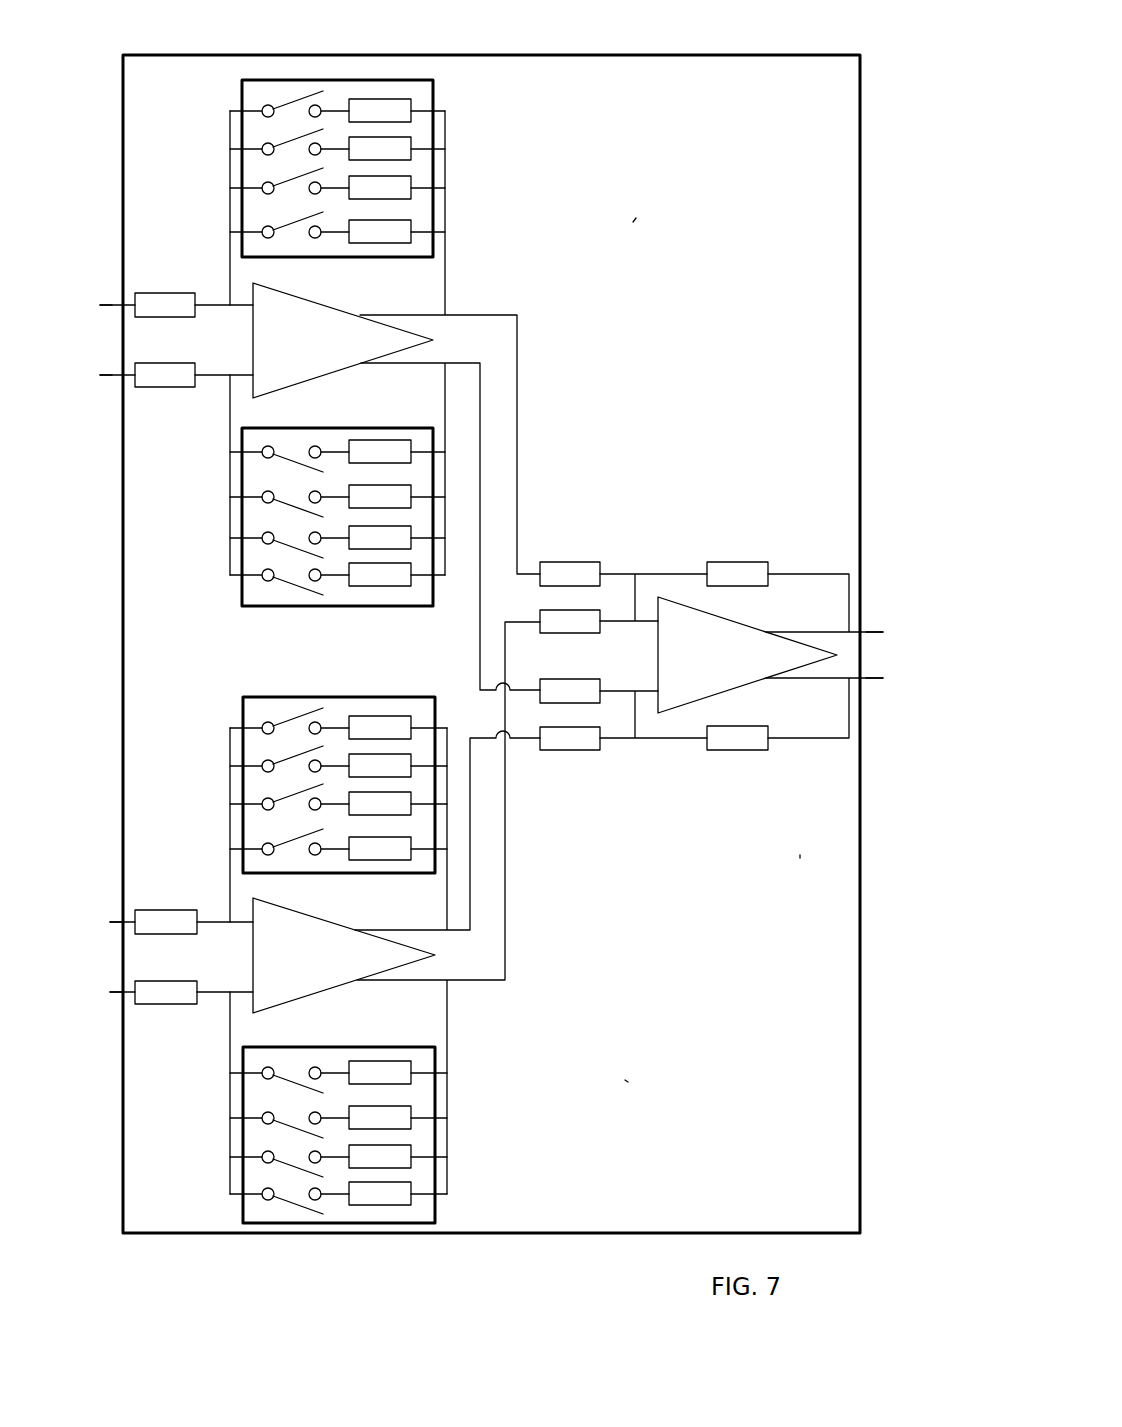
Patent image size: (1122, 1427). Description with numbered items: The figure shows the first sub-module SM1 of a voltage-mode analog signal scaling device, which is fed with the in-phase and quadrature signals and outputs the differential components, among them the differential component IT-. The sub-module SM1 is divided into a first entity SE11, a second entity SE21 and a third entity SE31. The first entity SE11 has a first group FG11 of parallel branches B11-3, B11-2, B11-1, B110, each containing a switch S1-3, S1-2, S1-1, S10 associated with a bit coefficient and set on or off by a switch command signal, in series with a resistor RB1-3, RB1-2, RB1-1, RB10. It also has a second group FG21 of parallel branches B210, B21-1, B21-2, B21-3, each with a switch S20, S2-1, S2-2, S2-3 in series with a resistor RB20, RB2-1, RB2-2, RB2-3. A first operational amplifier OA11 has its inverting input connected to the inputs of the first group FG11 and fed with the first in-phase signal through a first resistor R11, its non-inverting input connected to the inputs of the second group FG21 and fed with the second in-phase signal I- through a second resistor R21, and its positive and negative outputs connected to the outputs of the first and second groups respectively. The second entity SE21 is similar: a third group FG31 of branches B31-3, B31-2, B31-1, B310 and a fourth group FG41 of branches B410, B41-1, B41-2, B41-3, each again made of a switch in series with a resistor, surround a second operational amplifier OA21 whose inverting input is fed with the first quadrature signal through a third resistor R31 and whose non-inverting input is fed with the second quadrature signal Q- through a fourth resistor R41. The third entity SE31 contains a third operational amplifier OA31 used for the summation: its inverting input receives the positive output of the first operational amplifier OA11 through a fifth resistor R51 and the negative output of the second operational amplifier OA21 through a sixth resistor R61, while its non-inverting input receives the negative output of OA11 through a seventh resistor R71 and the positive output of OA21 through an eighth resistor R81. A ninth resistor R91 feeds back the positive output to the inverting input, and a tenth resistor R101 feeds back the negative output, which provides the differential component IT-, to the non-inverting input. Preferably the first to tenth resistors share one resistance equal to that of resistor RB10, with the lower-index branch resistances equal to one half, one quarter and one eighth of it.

The first sub-module SM1 is at (738, 55).
The first entity SE11 is at (633, 220).
The second entity SE21 is at (625, 1080).
The third entity SE31 is at (800, 855).
The first group FG11 is at (435, 80).
The second group FG21 is at (258, 606).
The third group FG31 is at (315, 875).
The fourth group FG41 is at (240, 1052).
The first resistor R11 is at (133, 291).
The second resistor R21 is at (133, 393).
The third resistor R31 is at (167, 936).
The fourth resistor R41 is at (167, 1006).
The fifth resistor R51 is at (603, 565).
The sixth resistor R61 is at (602, 638).
The seventh resistor R71 is at (602, 708).
The eighth resistor R81 is at (578, 752).
The ninth resistor R91 is at (752, 562).
The tenth resistor R101 is at (740, 750).
The first operational amplifier OA11 is at (420, 338).
The second operational amplifier OA21 is at (400, 973).
The third operational amplifier OA31 is at (748, 686).
The switch S1-3 is at (288, 88).
The switch S1-2 is at (272, 130).
The switch S1-1 is at (263, 173).
The switch S10 is at (263, 223).
The switch S20 is at (257, 470).
The switch S2-1 is at (257, 518).
The switch S2-2 is at (257, 555).
The switch S2-3 is at (257, 590).
The resistor RB1-3 is at (400, 88).
The resistor RB1-2 is at (422, 163).
The resistor RB1-1 is at (415, 815).
The resistor RB10 is at (420, 252).
The resistor RB20 is at (385, 418).
The resistor RB2-1 is at (415, 490).
The resistor RB2-2 is at (415, 528).
The resistor RB2-3 is at (360, 590).
The branch B11-3 is at (445, 108).
The branch B11-2 is at (445, 150).
The branch B11-1 is at (445, 190).
The branch B110 is at (445, 233).
The branch B210 is at (445, 452).
The branch B21-1 is at (445, 497).
The branch B21-2 is at (445, 538).
The branch B21-3 is at (447, 578).
The branch B31-3 is at (440, 728).
The branch B31-2 is at (240, 766).
The branch B31-1 is at (240, 804).
The branch B310 is at (240, 849).
The branch B410 is at (447, 1073).
The branch B41-1 is at (447, 1118).
The branch B41-2 is at (447, 1157).
The branch B41-3 is at (240, 1194).
The second in-phase modulated signal I- is at (88, 374).
The second quadrature modulated signal Q- is at (100, 989).
The differential component IT- is at (885, 682).